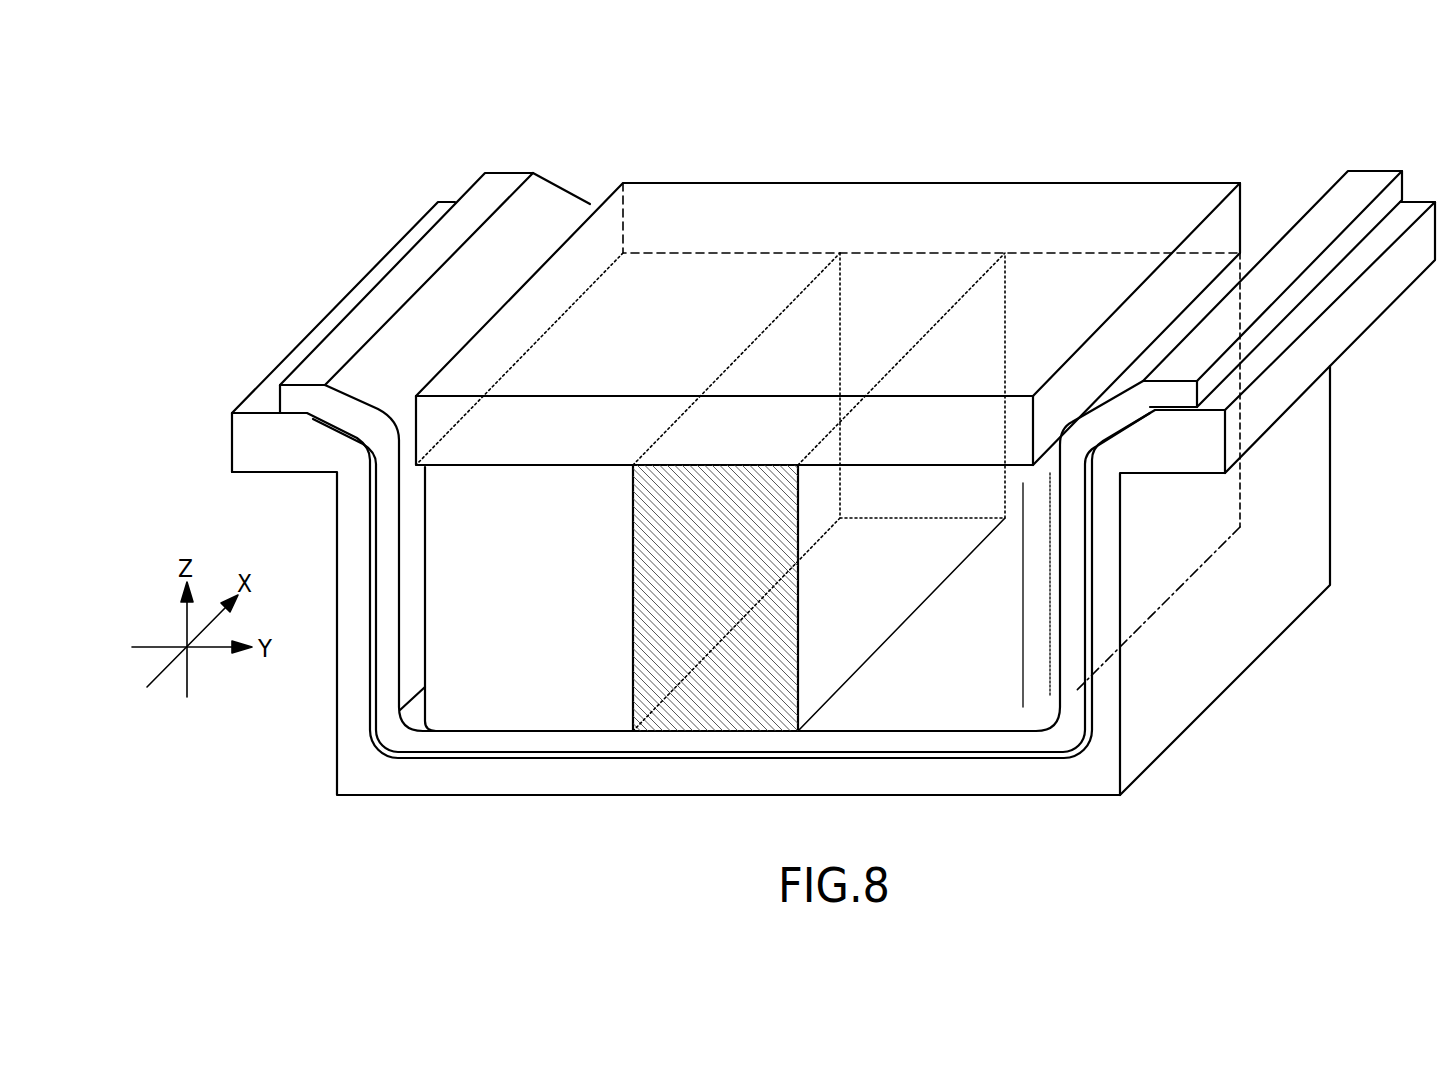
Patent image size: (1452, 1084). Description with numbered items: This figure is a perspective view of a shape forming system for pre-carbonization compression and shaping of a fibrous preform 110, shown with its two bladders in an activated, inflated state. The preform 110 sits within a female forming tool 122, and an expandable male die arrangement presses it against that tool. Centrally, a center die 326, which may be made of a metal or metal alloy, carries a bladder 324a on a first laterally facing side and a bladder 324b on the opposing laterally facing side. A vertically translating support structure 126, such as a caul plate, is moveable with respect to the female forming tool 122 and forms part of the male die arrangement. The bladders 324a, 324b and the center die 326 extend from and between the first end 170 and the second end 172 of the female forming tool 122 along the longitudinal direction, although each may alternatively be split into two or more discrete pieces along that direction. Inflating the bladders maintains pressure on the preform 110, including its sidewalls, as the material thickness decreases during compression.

The fibrous preform 110 is at (500, 185).
The female forming tool 122 is at (342, 154).
The support structure 126 is at (857, 182).
The first end of the female forming tool 170 is at (1100, 775).
The second end of the female forming tool 172 is at (1330, 483).
The bladder 324a is at (425, 567).
The bladder 324b is at (948, 728).
The center die 326 is at (710, 722).